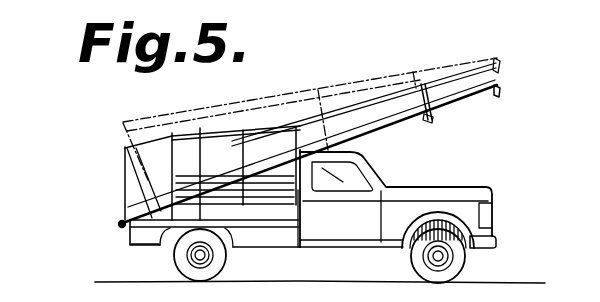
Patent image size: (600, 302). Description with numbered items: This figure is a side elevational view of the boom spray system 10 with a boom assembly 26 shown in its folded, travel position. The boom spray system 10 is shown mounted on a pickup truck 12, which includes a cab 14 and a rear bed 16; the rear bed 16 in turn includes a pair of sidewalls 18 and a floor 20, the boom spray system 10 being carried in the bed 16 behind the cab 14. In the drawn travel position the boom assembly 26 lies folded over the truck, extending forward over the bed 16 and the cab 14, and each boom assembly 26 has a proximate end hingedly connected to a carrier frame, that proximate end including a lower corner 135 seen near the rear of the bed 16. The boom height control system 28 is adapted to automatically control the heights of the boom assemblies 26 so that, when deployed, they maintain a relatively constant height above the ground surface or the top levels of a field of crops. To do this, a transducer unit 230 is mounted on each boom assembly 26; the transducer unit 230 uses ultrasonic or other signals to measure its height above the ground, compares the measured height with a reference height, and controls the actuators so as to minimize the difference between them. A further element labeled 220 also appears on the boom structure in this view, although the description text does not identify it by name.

The boom spray system 10 is at (258, 88).
The pickup truck 12 is at (495, 241).
The cab 14 is at (356, 149).
The rear bed 16 is at (161, 246).
The sidewalls 18 is at (288, 212).
The floor 20 is at (223, 211).
The boom assemblies 26 is at (501, 95).
The boom height control system 28 is at (430, 120).
The lower corner 135 is at (121, 227).
The rack post 220 is at (172, 132).
The transducer unit 230 is at (428, 128).